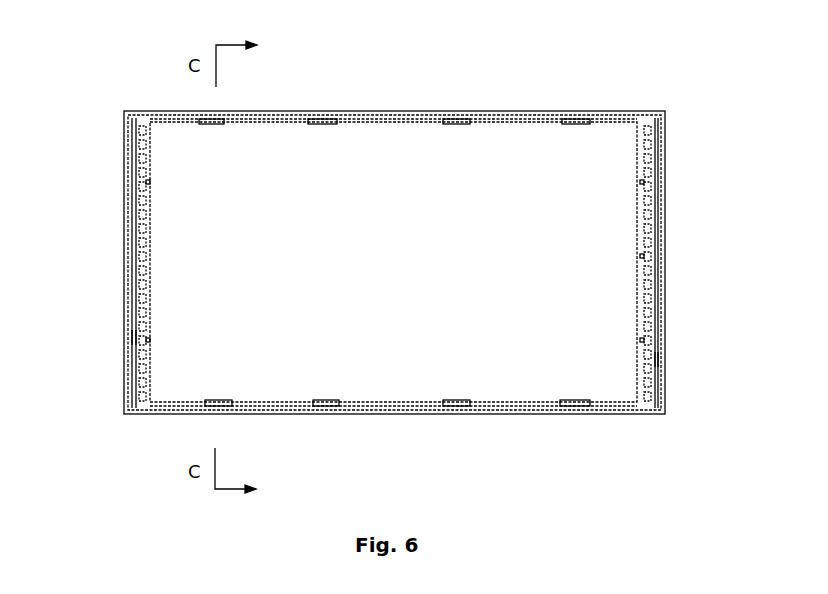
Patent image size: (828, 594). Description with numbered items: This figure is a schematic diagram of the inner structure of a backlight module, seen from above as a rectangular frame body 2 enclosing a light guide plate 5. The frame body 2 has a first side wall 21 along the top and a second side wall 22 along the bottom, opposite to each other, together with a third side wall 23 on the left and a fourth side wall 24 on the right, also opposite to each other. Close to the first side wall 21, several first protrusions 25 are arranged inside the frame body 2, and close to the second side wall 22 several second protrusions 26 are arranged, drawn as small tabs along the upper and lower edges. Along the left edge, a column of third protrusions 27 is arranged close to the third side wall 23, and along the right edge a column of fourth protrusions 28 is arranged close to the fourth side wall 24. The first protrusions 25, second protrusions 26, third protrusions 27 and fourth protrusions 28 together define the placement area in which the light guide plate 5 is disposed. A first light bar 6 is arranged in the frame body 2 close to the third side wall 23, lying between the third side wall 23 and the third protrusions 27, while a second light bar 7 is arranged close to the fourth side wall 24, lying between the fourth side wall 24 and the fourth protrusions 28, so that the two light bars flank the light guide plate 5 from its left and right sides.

The frame body 2 is at (386, 110).
The light guide plate 5 is at (593, 117).
The first side wall 21 is at (315, 117).
The second side wall 22 is at (407, 412).
The third side wall 23 is at (128, 178).
The fourth side wall 24 is at (665, 200).
The first protrusion 25 is at (448, 120).
The second protrusion 26 is at (462, 407).
The third protrusion 27 is at (143, 260).
The fourth protrusion 28 is at (643, 256).
The first light bar 6 is at (137, 337).
The second light bar 7 is at (658, 360).